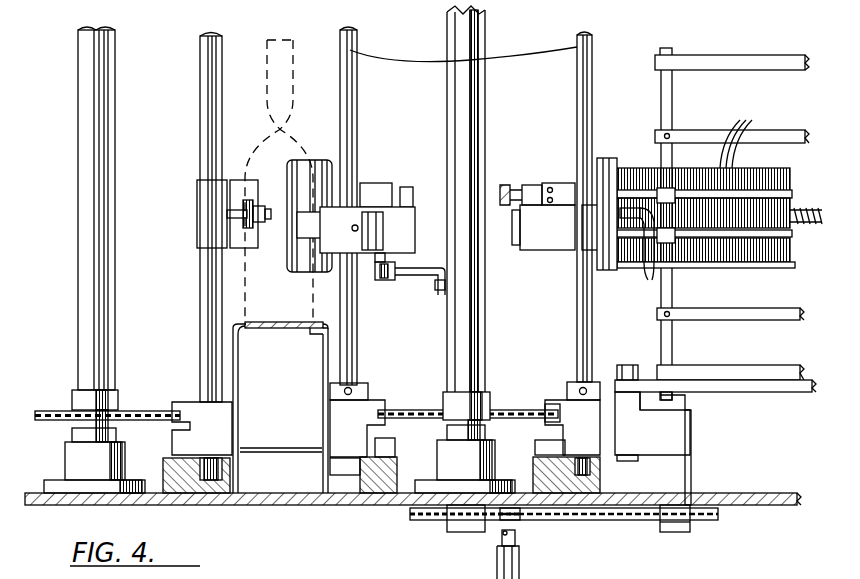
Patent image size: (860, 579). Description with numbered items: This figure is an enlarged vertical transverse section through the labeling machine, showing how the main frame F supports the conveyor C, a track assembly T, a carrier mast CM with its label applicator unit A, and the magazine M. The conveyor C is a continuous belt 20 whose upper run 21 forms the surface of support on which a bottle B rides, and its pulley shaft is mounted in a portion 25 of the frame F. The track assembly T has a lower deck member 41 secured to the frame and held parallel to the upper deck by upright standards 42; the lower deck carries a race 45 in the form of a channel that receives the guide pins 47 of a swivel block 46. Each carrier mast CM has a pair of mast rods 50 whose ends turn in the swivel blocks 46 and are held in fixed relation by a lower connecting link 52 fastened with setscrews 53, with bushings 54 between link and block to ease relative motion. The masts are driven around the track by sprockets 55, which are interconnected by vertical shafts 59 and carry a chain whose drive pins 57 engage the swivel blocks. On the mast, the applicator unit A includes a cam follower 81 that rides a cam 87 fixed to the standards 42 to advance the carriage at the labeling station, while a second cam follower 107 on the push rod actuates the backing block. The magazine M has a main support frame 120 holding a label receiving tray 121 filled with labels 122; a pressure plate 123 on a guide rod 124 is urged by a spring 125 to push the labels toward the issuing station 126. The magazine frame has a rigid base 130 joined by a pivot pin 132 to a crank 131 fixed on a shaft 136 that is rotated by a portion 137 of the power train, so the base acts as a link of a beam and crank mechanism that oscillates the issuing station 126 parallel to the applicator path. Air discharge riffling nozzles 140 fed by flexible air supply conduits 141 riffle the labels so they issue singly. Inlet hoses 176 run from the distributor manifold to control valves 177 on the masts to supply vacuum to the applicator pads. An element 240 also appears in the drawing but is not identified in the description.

The continuous belt 20 is at (280, 397).
The upper run 21 is at (303, 318).
The portion of frame 25 is at (234, 360).
The lower deck member 41 is at (600, 483).
The upright standards 42 is at (467, 199).
The race 45 is at (347, 470).
The swivel blocks 46 is at (466, 391).
The guide pins 47 is at (343, 480).
The mast rods 50 is at (577, 47).
The lower connecting link 52 is at (445, 373).
The setscrews 53 is at (343, 389).
The bushings 54 is at (343, 401).
The sprockets 55 is at (502, 408).
The drive pins 57 is at (552, 406).
The vertical shafts 59 is at (462, 122).
The cam follower 81 is at (372, 283).
The cam 87 is at (404, 282).
The cam follower 107 is at (517, 187).
The main support frame 120 is at (668, 345).
The label receiving tray 121 is at (750, 268).
The labels 122 is at (751, 138).
The pressure plate 123 is at (785, 180).
The guide rod 124 is at (810, 222).
The spring 125 is at (792, 210).
The issuing station 126 is at (622, 165).
The rigid base 130 is at (754, 392).
The crank 131 is at (690, 441).
The pivot pin 132 is at (625, 365).
The shaft 136 is at (672, 534).
The portion of power train 137 is at (708, 524).
The air discharge riffling nozzles 140 is at (624, 214).
The flexible air supply conduit 141 is at (648, 278).
The inlet hoses 176 is at (502, 546).
The control valves 177 is at (522, 563).
The stop member 240 is at (500, 189).
The label applicator units A is at (375, 183).
The bottles B is at (292, 38).
The conveyor C is at (232, 325).
The carrier masts CM is at (595, 58).
The main frame F is at (34, 490).
The magazine M is at (732, 210).
The track assemblies T is at (404, 481).